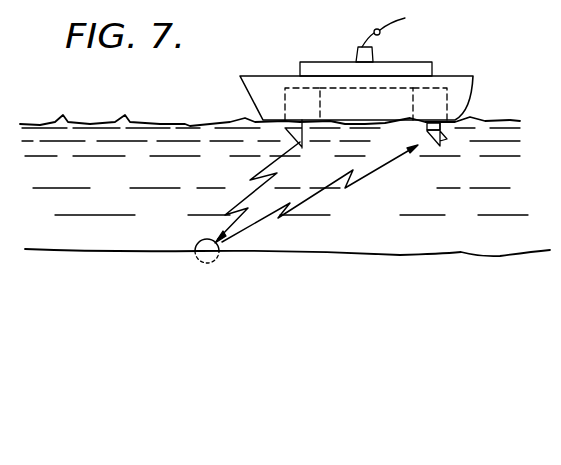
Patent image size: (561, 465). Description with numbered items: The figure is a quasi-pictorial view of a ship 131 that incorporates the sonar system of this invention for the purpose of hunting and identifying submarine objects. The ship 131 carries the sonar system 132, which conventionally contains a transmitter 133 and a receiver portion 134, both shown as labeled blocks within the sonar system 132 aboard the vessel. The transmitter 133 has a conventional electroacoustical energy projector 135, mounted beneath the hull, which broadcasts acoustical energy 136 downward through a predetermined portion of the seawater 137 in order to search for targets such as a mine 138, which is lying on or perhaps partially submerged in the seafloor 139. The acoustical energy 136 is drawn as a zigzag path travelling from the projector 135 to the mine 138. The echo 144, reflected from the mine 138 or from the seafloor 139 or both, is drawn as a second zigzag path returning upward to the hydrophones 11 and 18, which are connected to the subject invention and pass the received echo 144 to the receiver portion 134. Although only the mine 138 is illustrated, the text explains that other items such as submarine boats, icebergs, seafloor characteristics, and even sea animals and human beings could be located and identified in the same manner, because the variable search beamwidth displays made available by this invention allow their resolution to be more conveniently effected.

The ship 131 is at (393, 62).
The sonar system 132 is at (397, 92).
The transmitter 133 is at (283, 90).
The receiver portion 134 is at (447, 104).
The electroacoustical energy projector 135 is at (283, 130).
The acoustical energy 136 is at (244, 197).
The seawater 137 is at (112, 181).
The mine 138 is at (198, 244).
The seafloor 139 is at (331, 251).
The echo 144 is at (374, 169).
The hydrophone 11 is at (426, 129).
The hydrophone 18 is at (441, 138).